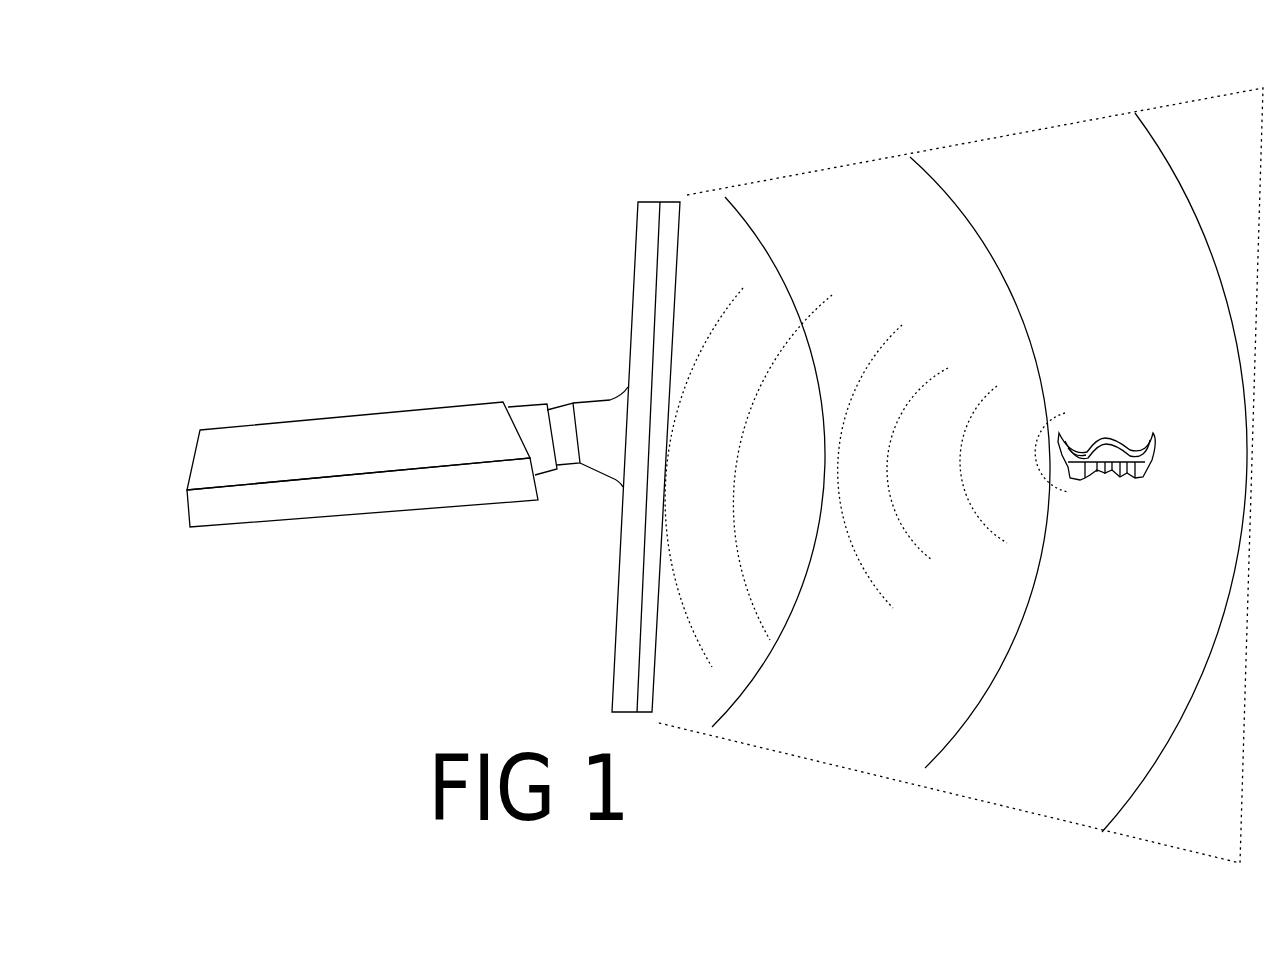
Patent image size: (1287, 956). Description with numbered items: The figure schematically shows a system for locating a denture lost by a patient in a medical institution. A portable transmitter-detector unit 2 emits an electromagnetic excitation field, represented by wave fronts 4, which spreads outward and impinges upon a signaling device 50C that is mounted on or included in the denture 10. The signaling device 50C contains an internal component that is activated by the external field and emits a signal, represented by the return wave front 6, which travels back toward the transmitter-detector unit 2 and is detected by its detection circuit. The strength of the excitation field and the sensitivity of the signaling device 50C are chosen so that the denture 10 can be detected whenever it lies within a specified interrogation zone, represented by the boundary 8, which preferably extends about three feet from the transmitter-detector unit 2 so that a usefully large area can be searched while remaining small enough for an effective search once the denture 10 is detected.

The transmitter-detector unit 2 is at (633, 257).
The wave fronts 4 is at (982, 232).
The return wave front 6 is at (863, 370).
The boundary 8 is at (1020, 815).
The denture 10 is at (1130, 450).
The signaling device 50C is at (1072, 452).